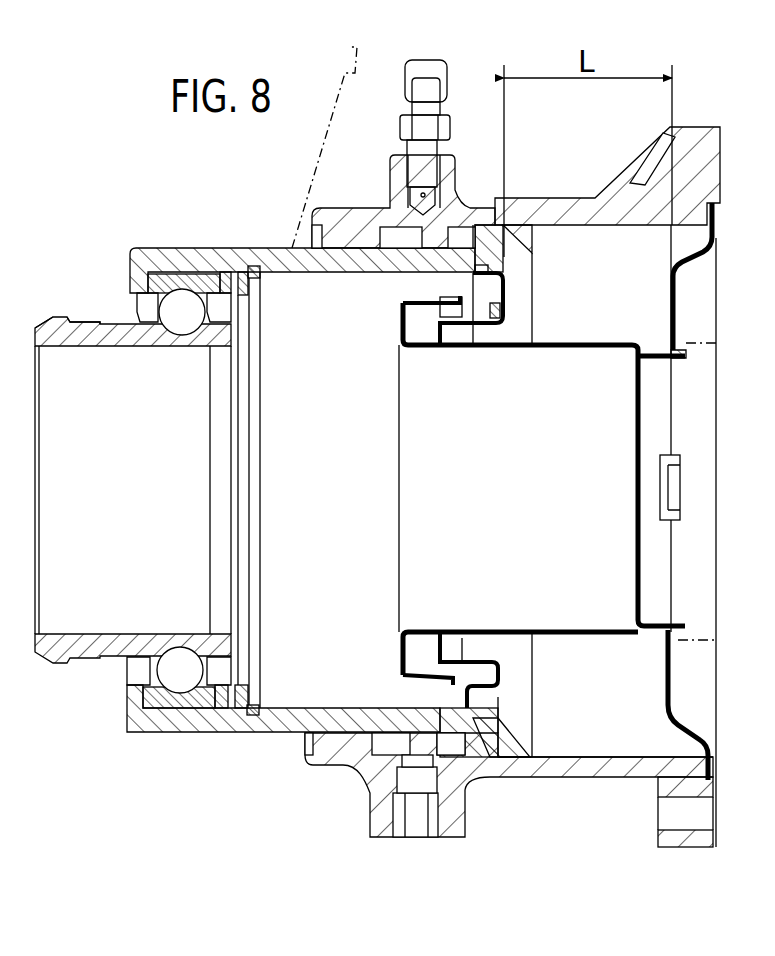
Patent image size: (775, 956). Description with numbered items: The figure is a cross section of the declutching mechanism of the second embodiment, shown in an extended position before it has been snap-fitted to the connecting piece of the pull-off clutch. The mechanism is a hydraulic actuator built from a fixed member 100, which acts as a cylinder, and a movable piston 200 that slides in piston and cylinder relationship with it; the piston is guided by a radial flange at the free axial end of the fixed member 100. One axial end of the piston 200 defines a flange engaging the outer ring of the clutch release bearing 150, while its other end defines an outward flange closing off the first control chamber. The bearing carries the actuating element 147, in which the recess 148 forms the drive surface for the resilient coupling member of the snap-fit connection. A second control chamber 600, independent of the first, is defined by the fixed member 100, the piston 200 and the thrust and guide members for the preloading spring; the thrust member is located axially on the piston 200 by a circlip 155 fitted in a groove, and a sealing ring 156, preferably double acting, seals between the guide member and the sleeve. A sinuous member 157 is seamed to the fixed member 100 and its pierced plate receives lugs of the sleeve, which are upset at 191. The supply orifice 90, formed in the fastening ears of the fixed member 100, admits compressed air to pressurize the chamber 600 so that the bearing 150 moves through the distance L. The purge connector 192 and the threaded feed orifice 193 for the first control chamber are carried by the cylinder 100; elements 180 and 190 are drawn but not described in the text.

The supply orifice 90 is at (672, 158).
The fixed member 100 is at (340, 780).
The actuating element 147 is at (50, 318).
The recess 148 is at (90, 322).
The clutch release bearing 150 is at (112, 668).
The circlip 155 is at (490, 777).
The sealing ring 156 is at (460, 348).
The member 157 is at (711, 758).
The ring 180 is at (233, 268).
The outer cup 190 is at (723, 248).
The upset lugs 191 is at (668, 630).
The purge connector 192 is at (447, 123).
The threaded feed orifice 193 is at (408, 813).
The movable piston 200 is at (195, 743).
The second control chamber 600 is at (583, 723).